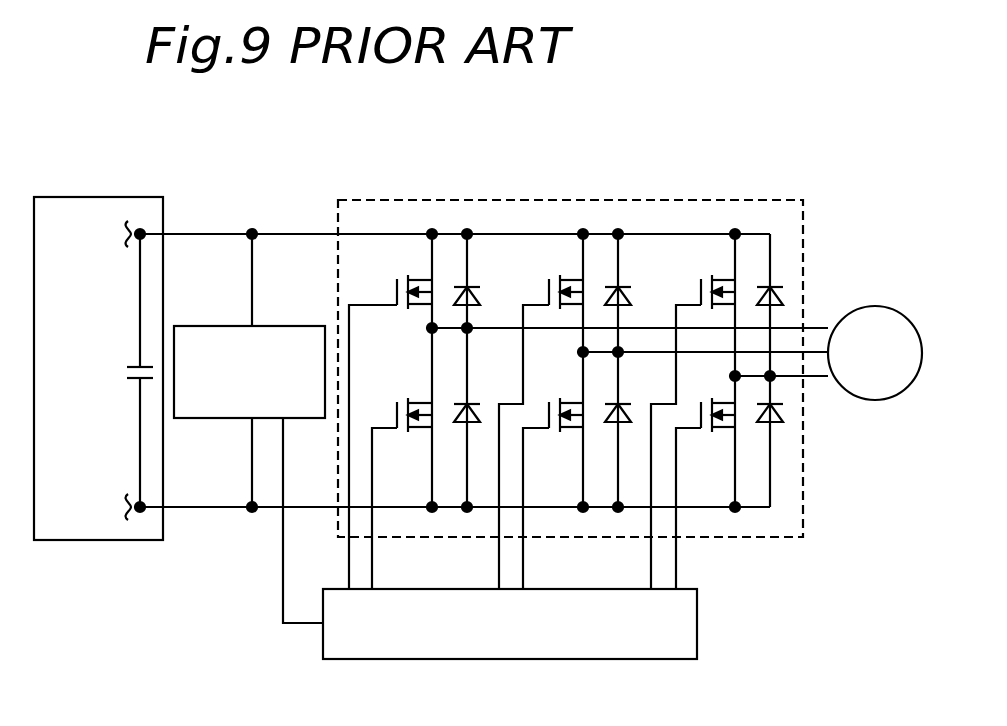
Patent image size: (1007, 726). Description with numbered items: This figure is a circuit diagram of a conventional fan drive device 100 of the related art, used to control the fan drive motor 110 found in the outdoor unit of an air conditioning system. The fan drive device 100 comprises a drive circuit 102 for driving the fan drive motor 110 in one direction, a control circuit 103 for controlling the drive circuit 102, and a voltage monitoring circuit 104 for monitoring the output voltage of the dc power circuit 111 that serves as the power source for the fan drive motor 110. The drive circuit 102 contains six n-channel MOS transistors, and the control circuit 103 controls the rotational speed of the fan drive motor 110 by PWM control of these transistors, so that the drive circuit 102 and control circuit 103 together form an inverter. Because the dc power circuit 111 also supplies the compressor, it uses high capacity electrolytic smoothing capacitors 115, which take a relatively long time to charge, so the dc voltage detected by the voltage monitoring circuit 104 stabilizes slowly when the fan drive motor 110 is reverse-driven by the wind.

The fan drive device 100 is at (840, 218).
The drive circuit 102 is at (588, 195).
The control circuit 103 is at (498, 659).
The voltage monitoring circuit 104 is at (204, 326).
The fan drive motor 110 is at (878, 400).
The dc power circuit 111 is at (152, 194).
The electrolytic smoothing capacitor 115 is at (129, 382).